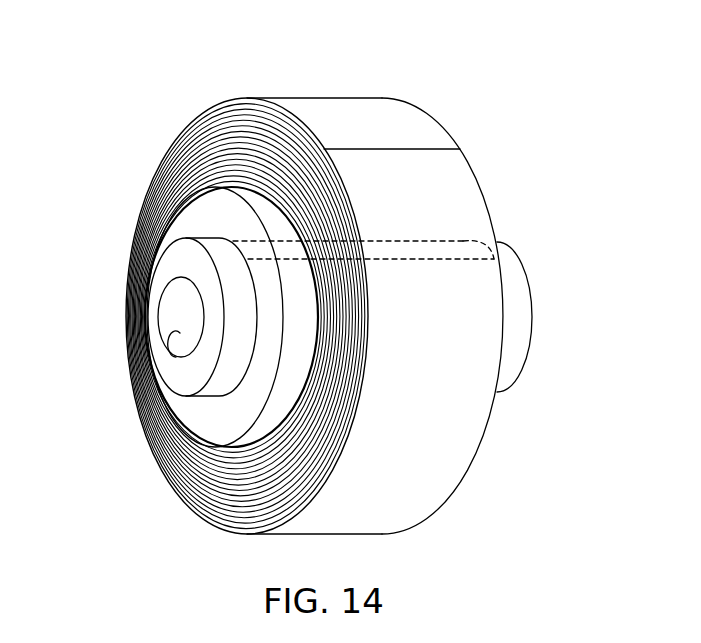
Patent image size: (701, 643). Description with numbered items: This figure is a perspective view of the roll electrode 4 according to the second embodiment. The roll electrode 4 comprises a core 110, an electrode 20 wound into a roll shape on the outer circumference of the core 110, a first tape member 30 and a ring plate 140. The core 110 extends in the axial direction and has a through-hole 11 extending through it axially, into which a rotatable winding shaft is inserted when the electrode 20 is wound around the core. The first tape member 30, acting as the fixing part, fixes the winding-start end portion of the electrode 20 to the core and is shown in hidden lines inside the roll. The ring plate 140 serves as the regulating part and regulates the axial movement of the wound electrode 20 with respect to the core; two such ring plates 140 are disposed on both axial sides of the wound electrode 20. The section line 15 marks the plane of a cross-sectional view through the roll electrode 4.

The roll electrode 4 is at (60, 69).
The through-hole 11 is at (178, 337).
The section line 15- 15 is at (170, 318).
The electrode 20 is at (351, 108).
The first tape member 30 is at (468, 241).
The core 110 is at (513, 268).
The ring plate 140 is at (213, 425).